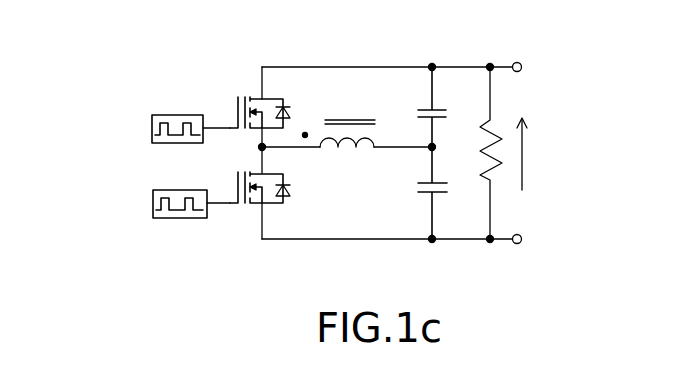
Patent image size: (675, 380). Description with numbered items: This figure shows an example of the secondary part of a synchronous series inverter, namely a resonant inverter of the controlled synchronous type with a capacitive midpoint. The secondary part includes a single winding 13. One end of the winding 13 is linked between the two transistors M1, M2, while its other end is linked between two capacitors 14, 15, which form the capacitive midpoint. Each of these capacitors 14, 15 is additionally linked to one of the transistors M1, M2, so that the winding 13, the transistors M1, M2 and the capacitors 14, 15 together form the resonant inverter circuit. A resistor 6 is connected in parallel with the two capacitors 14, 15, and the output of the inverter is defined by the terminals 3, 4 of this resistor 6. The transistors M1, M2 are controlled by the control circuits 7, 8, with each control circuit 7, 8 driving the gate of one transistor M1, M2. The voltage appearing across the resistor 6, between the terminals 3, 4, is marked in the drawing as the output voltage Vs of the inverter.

The terminal 3 is at (521, 243).
The terminal 4 is at (520, 62).
The resistor 6 is at (500, 181).
The control circuit 7 is at (168, 115).
The control circuit 8 is at (173, 219).
The winding 13 is at (350, 149).
The capacitor 14 is at (443, 109).
The capacitor 15 is at (448, 190).
The transistor M1 is at (280, 110).
The transistor M2 is at (281, 192).
The output voltage Vs is at (535, 154).